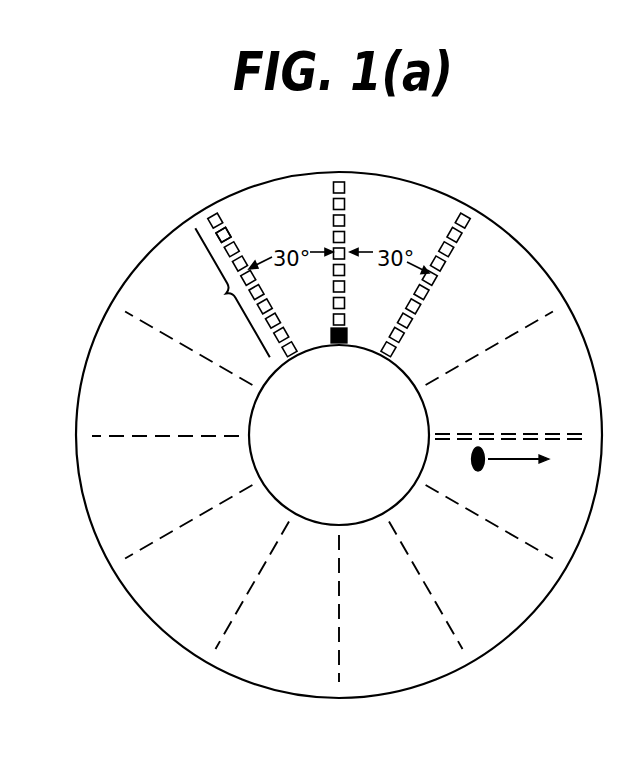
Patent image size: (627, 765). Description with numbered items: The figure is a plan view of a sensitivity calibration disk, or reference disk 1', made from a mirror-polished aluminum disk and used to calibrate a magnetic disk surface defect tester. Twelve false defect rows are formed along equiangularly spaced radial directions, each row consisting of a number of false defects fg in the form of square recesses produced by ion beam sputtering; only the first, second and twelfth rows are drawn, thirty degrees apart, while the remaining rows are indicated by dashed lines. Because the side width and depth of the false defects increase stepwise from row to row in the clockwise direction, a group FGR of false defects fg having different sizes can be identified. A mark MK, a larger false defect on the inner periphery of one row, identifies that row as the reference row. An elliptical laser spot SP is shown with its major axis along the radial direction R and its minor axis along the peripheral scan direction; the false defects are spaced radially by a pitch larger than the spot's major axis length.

The sensitivity calibration disk 1' is at (332, 435).
The false defect fg is at (223, 232).
The group of false defects FGR is at (220, 294).
The mark MK is at (340, 344).
The laser spot SP is at (511, 472).
The radial direction R is at (527, 462).